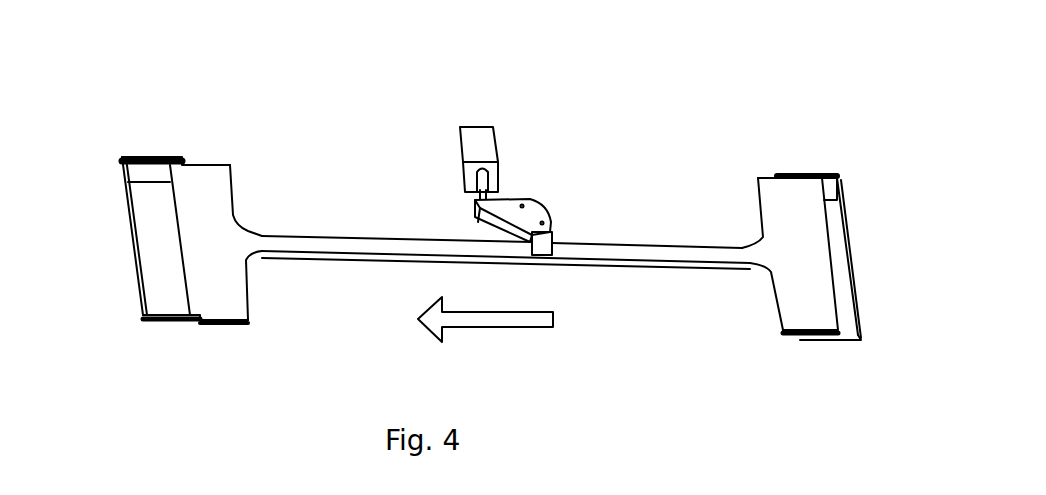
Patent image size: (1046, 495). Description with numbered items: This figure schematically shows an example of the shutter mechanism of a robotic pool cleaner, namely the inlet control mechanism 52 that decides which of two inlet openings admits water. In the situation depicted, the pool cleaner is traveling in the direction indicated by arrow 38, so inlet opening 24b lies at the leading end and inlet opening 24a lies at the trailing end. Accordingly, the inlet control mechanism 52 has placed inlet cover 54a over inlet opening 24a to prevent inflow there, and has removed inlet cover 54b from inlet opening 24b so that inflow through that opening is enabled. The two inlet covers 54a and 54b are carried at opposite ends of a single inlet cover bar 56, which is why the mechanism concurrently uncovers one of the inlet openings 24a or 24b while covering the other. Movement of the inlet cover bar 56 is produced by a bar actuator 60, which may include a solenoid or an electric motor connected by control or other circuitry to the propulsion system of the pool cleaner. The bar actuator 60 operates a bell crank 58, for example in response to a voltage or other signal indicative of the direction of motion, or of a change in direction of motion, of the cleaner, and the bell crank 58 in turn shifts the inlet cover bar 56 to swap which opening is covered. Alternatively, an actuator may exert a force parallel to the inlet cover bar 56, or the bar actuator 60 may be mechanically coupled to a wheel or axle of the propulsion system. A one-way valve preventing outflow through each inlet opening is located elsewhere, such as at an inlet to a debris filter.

The inlet control mechanism 52 is at (273, 133).
The inlet opening 24a is at (823, 195).
The inlet opening 24b is at (160, 282).
The inlet cover 54a is at (790, 298).
The inlet cover 54b is at (233, 290).
The inlet cover bar 56 is at (650, 242).
The bell crank 58 is at (512, 202).
The bar actuator 60 is at (465, 160).
The arrow 38 is at (478, 327).